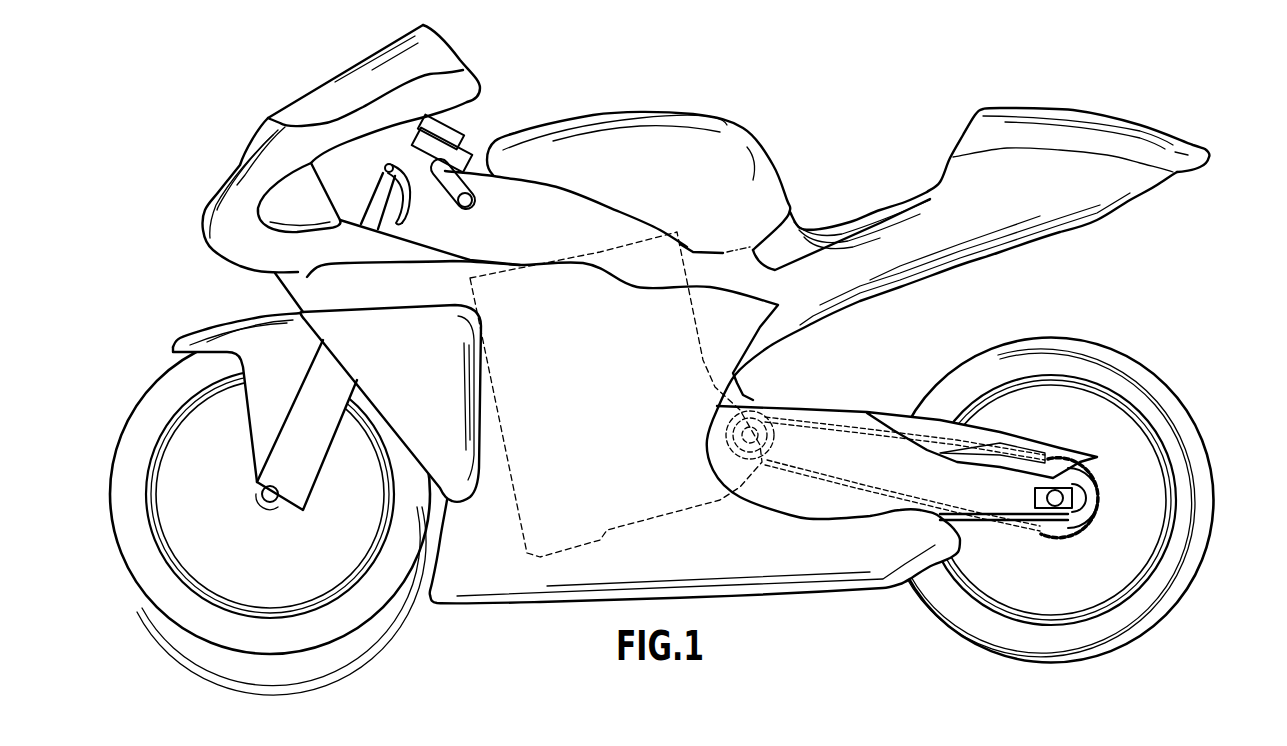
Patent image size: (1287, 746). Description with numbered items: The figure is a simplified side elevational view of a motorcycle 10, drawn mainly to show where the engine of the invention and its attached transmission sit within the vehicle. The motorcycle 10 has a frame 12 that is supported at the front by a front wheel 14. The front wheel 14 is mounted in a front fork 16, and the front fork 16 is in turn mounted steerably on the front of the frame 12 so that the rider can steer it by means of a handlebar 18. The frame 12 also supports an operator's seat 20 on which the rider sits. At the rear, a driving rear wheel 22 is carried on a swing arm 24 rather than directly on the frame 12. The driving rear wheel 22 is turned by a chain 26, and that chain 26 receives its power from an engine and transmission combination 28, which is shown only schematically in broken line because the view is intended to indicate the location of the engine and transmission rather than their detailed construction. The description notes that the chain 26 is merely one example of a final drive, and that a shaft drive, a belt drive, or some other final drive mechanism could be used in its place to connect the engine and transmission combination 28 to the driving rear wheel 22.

The motorcycle 10 is at (796, 612).
The frame 12 is at (587, 192).
The front wheel 14 is at (317, 612).
The front fork 16 is at (300, 390).
The handlebar 18 is at (474, 207).
The operator's seat 20 is at (864, 207).
The driving rear wheel 22 is at (1175, 463).
The swing arm 24 is at (856, 405).
The chain 26 is at (1100, 497).
The engine and transmission combination 28 is at (703, 360).